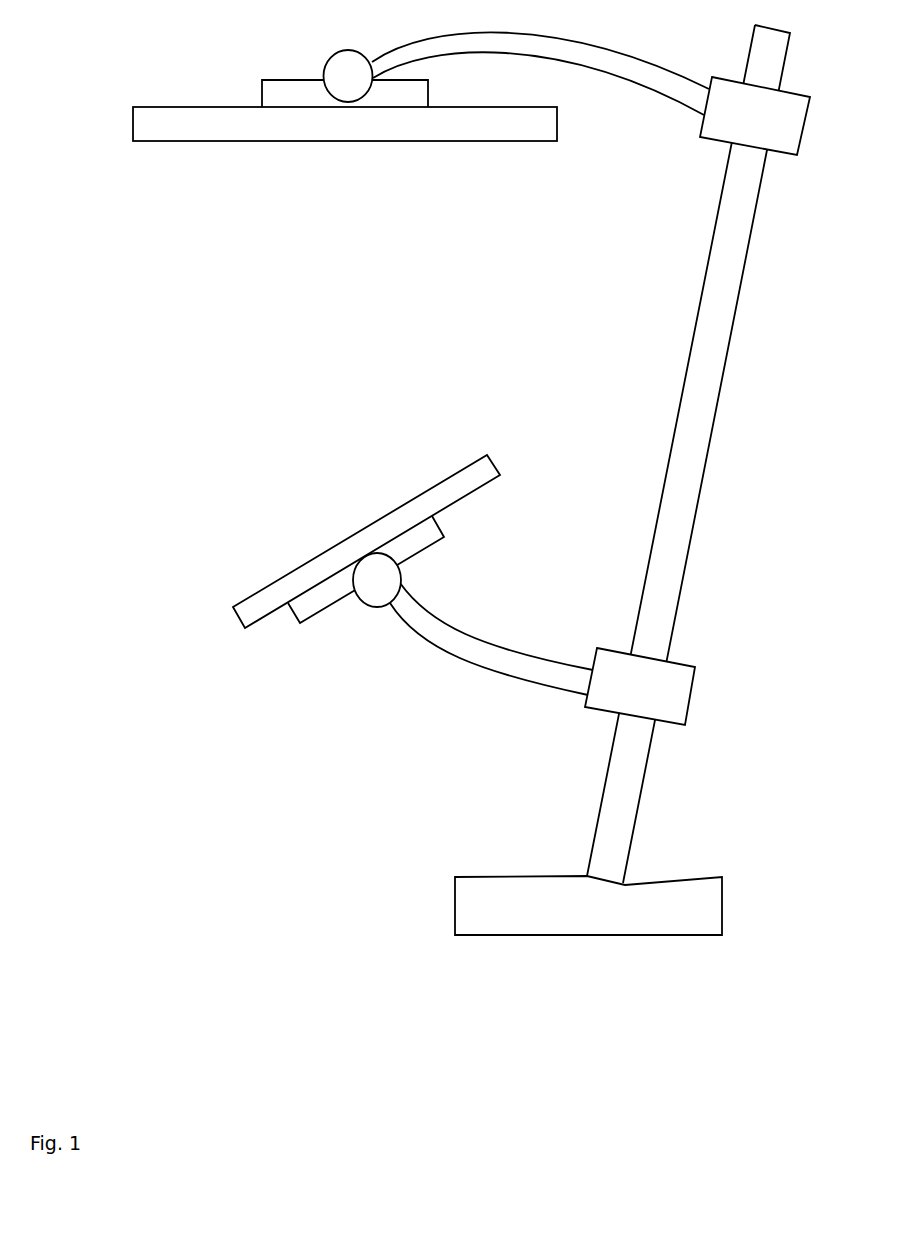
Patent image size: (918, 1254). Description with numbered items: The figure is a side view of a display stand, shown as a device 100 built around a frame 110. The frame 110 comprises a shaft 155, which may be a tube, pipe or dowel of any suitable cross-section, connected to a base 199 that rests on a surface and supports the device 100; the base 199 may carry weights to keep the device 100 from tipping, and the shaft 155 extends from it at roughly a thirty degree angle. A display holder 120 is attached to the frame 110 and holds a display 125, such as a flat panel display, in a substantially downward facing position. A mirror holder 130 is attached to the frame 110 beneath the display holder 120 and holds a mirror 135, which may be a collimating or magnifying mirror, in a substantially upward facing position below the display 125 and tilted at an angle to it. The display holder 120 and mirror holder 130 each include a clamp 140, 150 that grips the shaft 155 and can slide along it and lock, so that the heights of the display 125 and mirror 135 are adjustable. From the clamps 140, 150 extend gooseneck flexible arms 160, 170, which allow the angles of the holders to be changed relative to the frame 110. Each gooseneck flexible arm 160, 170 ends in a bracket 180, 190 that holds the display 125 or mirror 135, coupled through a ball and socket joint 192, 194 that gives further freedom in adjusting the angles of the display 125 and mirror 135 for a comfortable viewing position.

The device 100 is at (168, 973).
The frame 110 is at (709, 561).
The display holder 120 is at (345, 75).
The display 125 is at (227, 140).
The mirror holder 130 is at (394, 569).
The mirror 135 is at (475, 473).
The clamp 140 is at (777, 123).
The clamp 150 is at (656, 701).
The shaft 155 is at (722, 348).
The gooseneck flexible arm 160 is at (685, 97).
The gooseneck flexible arm 170 is at (493, 655).
The bracket 180 is at (280, 90).
The bracket 190 is at (433, 535).
The ball and socket joint 192 is at (352, 53).
The ball and socket joint 194 is at (387, 570).
The base 199 is at (565, 921).